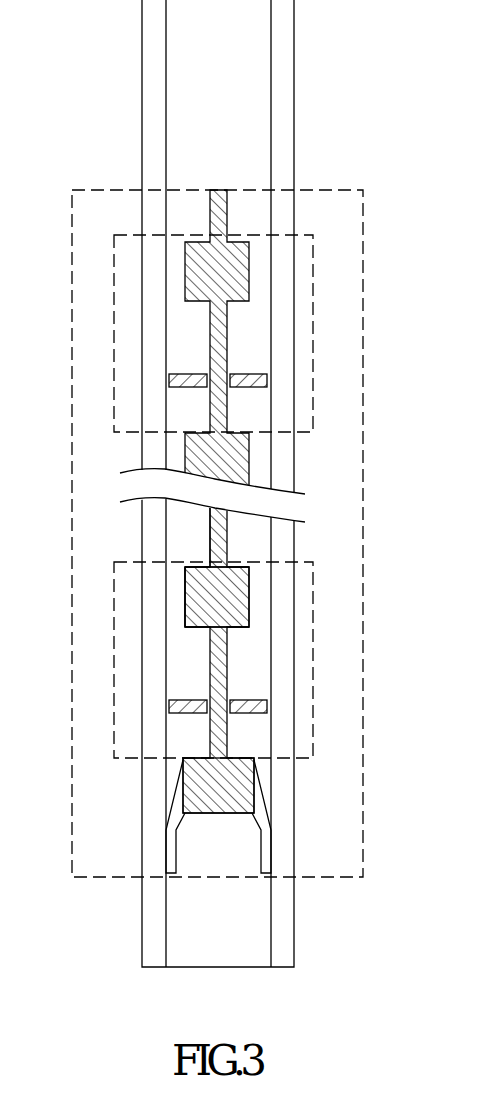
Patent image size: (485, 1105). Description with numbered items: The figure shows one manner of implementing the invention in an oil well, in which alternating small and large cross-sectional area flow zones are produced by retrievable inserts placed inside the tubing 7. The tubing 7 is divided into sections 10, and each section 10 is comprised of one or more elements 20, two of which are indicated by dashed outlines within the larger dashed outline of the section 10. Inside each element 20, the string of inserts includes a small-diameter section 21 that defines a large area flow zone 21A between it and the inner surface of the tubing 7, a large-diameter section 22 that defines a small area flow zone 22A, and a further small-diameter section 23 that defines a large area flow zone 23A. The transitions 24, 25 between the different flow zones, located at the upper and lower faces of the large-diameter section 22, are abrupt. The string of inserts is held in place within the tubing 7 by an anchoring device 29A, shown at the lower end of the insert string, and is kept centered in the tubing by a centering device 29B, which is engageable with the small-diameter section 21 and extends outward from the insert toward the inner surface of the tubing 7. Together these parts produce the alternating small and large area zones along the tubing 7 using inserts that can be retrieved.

The tubing 7 is at (294, 33).
The section 10 is at (72, 485).
The element 20 is at (112, 357).
The small-diameter section 21 is at (228, 725).
The large area flow zone 21A is at (255, 745).
The large-diameter section 22 is at (250, 603).
The small area flow zone 22A is at (177, 602).
The small-diameter section 23 is at (227, 530).
The large area flow zone 23A is at (200, 545).
The transition 24 is at (240, 560).
The transition 25 is at (238, 628).
The anchoring device 29A is at (263, 797).
The centering device 29B is at (188, 713).